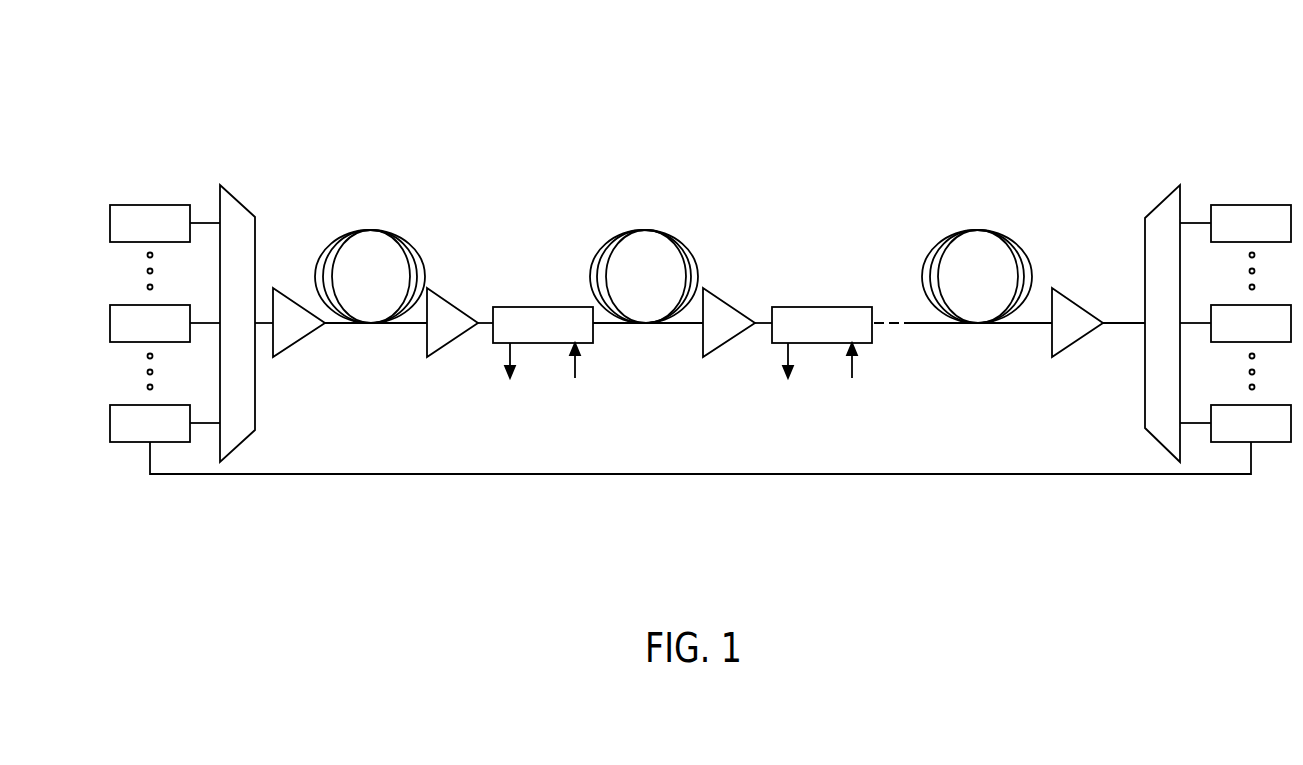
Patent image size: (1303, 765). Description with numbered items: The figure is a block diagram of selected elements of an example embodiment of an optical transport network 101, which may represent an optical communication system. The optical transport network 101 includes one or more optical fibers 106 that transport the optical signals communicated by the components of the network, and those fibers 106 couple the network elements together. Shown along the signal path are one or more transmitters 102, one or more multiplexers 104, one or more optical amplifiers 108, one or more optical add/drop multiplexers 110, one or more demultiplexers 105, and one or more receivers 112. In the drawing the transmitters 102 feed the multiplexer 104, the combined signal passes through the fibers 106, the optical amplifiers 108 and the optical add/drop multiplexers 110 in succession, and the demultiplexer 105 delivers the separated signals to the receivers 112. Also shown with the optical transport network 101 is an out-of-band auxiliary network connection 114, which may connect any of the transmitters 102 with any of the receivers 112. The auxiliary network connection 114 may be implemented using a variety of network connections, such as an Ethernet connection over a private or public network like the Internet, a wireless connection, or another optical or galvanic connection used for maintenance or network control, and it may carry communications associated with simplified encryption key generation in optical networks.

The optical transport network 101 is at (181, 108).
The transmitters 102 is at (137, 205).
The multiplexers 104 is at (237, 200).
The demultiplexers 105 is at (1169, 195).
The optical fibers 106 is at (367, 230).
The optical amplifiers 108 is at (297, 341).
The optical add/drop multiplexers 110 is at (531, 307).
The receivers 112 is at (1265, 205).
The out-of-band auxiliary network connection 114 is at (693, 476).